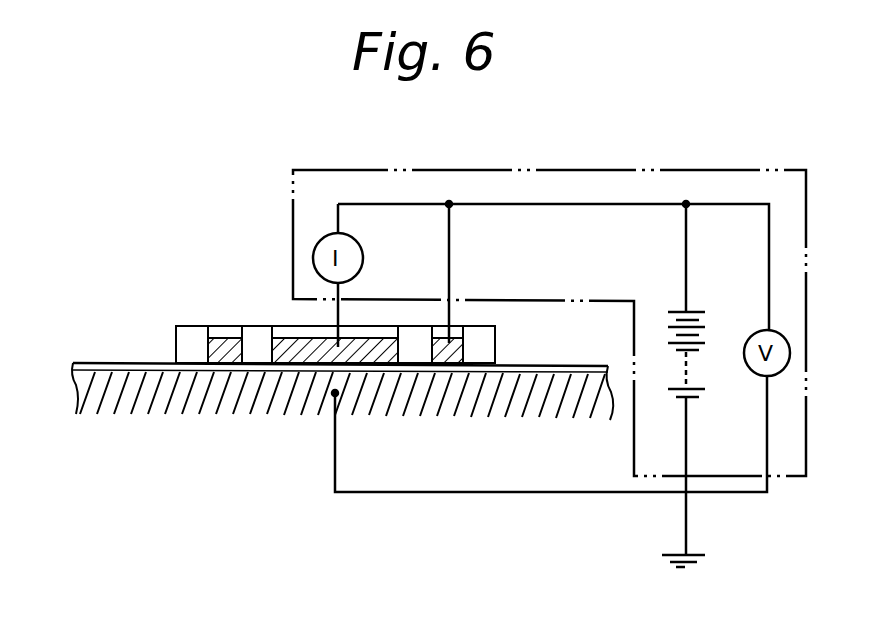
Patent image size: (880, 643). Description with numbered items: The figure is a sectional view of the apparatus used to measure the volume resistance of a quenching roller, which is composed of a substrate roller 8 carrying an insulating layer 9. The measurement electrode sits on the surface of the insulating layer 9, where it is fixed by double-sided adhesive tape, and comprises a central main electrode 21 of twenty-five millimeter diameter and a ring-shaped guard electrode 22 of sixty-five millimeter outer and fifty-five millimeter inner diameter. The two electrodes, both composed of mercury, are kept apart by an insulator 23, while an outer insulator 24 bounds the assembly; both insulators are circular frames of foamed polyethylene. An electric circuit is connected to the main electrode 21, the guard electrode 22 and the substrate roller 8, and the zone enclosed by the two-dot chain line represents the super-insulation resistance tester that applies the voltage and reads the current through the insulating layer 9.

The substrate roller 8 is at (93, 396).
The insulating layer 9 is at (100, 362).
The main electrode 21 is at (290, 340).
The guard electrode 22 is at (219, 336).
The insulator 23 is at (253, 337).
The outer insulator 24 is at (184, 348).